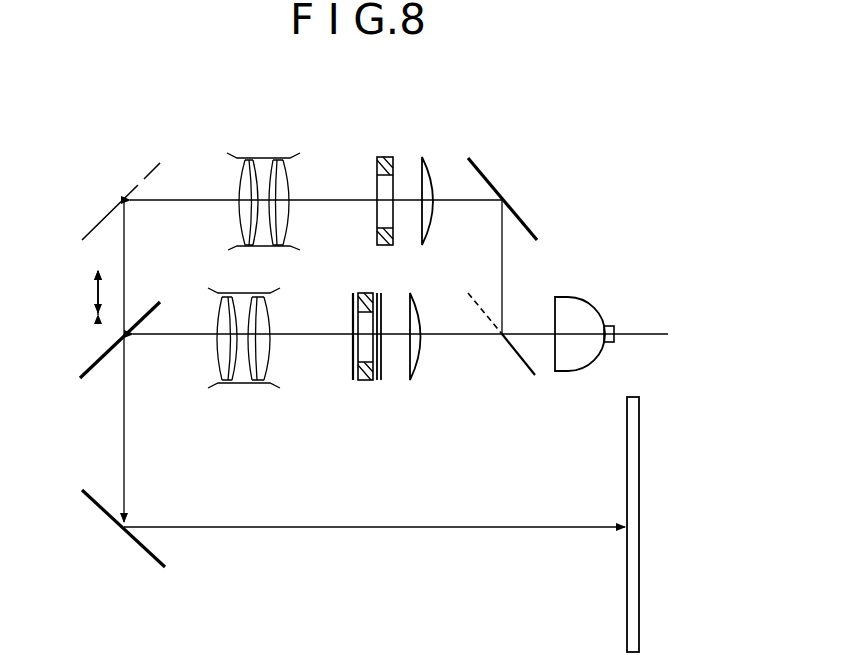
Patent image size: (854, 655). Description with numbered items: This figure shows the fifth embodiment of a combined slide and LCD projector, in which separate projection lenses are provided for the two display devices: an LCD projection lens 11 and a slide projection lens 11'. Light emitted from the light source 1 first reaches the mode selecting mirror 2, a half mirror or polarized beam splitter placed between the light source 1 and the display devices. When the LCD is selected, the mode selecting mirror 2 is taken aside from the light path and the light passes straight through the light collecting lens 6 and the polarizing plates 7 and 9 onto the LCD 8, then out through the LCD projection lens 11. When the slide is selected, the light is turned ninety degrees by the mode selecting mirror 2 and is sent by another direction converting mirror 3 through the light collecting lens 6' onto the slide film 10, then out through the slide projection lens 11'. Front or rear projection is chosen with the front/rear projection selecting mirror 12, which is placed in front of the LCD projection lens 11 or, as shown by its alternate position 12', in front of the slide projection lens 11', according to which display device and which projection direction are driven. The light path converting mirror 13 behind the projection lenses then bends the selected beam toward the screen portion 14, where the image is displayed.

The light source 1 is at (580, 320).
The mode selecting mirror 2 is at (507, 347).
The direction converting mirror 3 is at (520, 215).
The light collecting lens 6 is at (414, 366).
The light collecting lens 6' is at (429, 176).
The polarizing plate 7 is at (388, 364).
The LCD 8 is at (365, 380).
The polarizing plate 9 is at (352, 367).
The slide film 10 is at (385, 155).
The LCD projection lens 11 is at (244, 361).
The slide projection lens 11' is at (263, 179).
The front/rear projection selecting mirror 12 is at (103, 340).
The front/rear projection selecting mirror (alternate position) 12' is at (121, 197).
The light path converting mirror 13 is at (110, 517).
The screen portion 14 is at (635, 505).